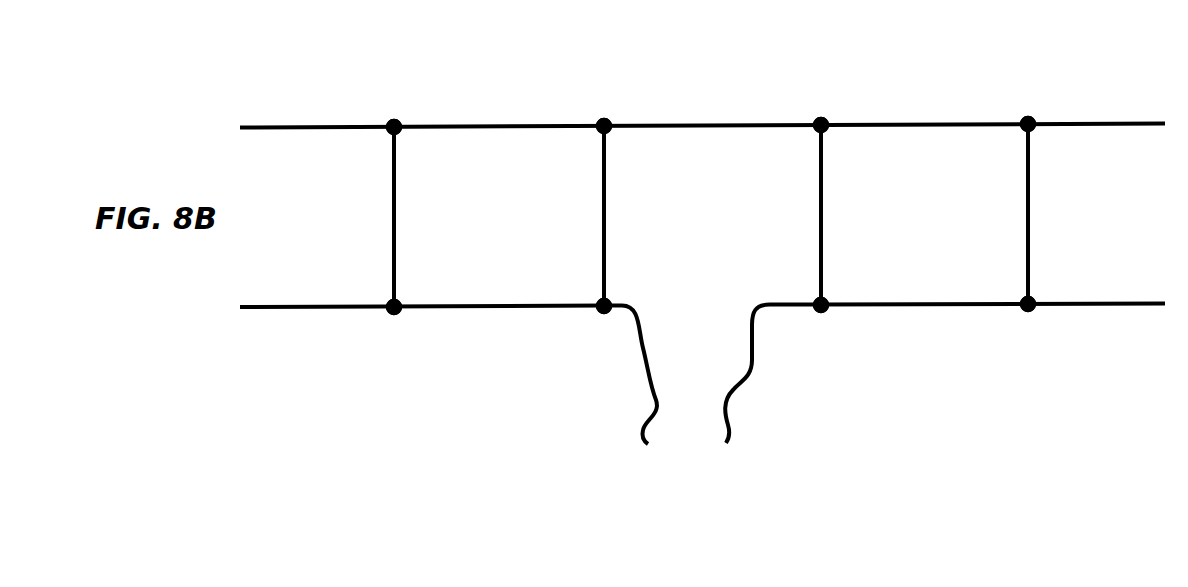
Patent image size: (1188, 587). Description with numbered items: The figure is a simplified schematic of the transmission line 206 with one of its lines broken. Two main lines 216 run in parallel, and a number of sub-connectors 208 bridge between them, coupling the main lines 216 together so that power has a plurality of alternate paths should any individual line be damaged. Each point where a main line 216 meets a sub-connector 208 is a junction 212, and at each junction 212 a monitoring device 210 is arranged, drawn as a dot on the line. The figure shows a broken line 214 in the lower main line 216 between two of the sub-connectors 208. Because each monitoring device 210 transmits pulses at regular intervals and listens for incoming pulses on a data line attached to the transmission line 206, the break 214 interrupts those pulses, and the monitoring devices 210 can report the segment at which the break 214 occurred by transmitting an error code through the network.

The transmission line 206 is at (375, 74).
The sub-connector 208 is at (392, 220).
The monitoring device 210 is at (396, 131).
The junction 212 is at (396, 123).
The broken line 214 is at (687, 436).
The main line 216 is at (292, 124).